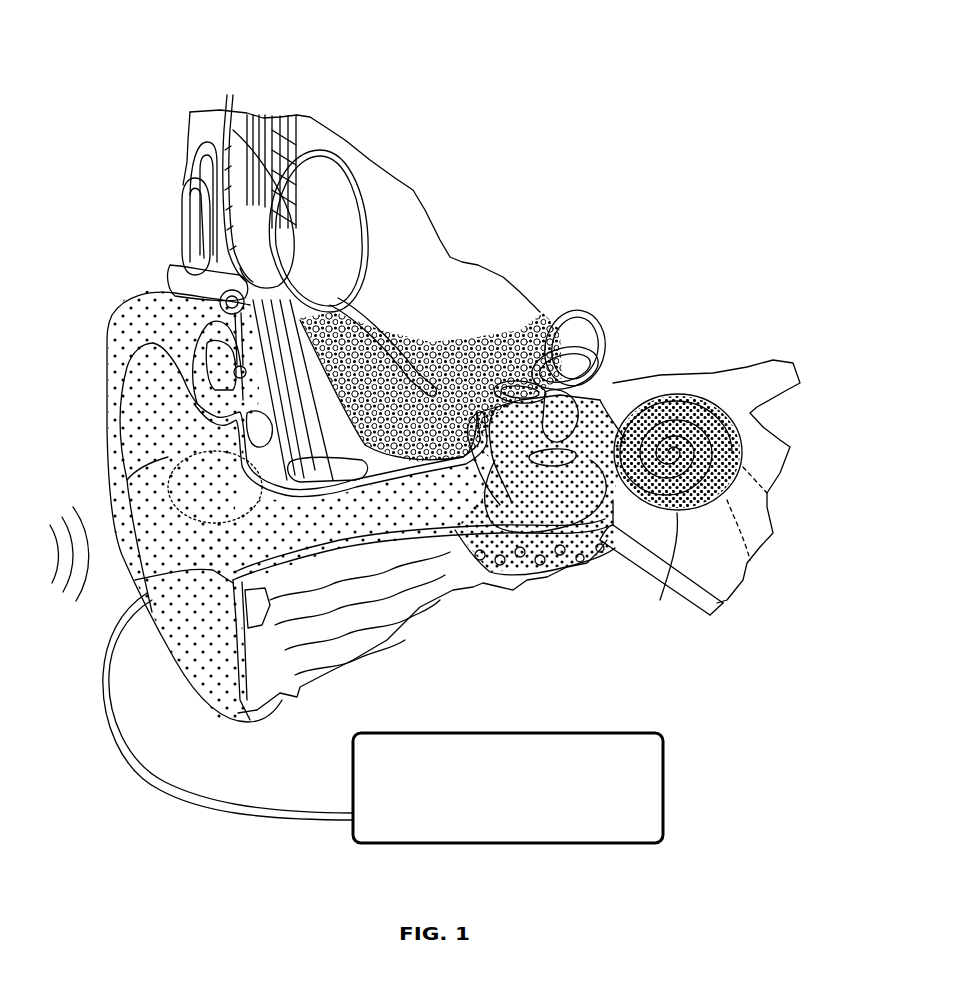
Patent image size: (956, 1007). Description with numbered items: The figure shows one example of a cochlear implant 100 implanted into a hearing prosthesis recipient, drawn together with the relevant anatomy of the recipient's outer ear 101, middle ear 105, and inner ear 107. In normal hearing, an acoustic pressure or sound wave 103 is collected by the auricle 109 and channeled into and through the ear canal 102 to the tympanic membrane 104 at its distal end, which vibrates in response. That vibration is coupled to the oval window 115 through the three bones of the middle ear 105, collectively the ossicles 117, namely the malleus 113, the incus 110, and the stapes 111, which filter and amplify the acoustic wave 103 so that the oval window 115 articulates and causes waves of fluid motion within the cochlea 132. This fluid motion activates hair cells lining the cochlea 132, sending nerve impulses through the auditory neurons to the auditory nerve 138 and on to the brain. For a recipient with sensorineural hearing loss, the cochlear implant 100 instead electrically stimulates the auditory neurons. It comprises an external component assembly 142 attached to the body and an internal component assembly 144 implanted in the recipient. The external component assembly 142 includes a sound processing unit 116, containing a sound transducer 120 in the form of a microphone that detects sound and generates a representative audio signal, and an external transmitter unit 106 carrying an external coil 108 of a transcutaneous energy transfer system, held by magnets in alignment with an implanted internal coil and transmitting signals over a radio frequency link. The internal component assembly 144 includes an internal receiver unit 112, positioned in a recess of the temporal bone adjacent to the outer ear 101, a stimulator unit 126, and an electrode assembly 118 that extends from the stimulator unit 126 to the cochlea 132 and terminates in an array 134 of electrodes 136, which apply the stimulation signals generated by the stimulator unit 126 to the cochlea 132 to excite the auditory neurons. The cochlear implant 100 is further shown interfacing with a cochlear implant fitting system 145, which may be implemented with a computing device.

The cochlear implant 100 is at (100, 148).
The outer ear 101 is at (248, 741).
The ear canal 102 is at (347, 517).
The sound wave 103 is at (86, 525).
The tympanic membrane 104 is at (480, 510).
The middle ear 105 is at (525, 633).
The external transmitter unit 106 is at (190, 213).
The inner ear 107 is at (719, 662).
The external coil 108 is at (193, 147).
The auricle 109 is at (147, 605).
The incus 110 is at (585, 400).
The stapes 111 is at (620, 420).
The internal receiver unit 112 is at (228, 108).
The malleus 113 is at (577, 320).
The oval window 115 is at (678, 423).
The sound processing unit 116 is at (193, 267).
The ossicles 117 is at (634, 377).
The electrode assembly 118 is at (452, 257).
The sound transducer 120 is at (208, 286).
The stimulator unit 126 is at (333, 310).
The cochlea 132 is at (659, 571).
The array of electrodes 134 is at (765, 542).
The electrodes 136 is at (786, 488).
The auditory nerve 138 is at (775, 372).
The external component assembly 142 is at (163, 163).
The internal component assembly 144 is at (334, 204).
The cochlear implant fitting system 145 is at (665, 750).